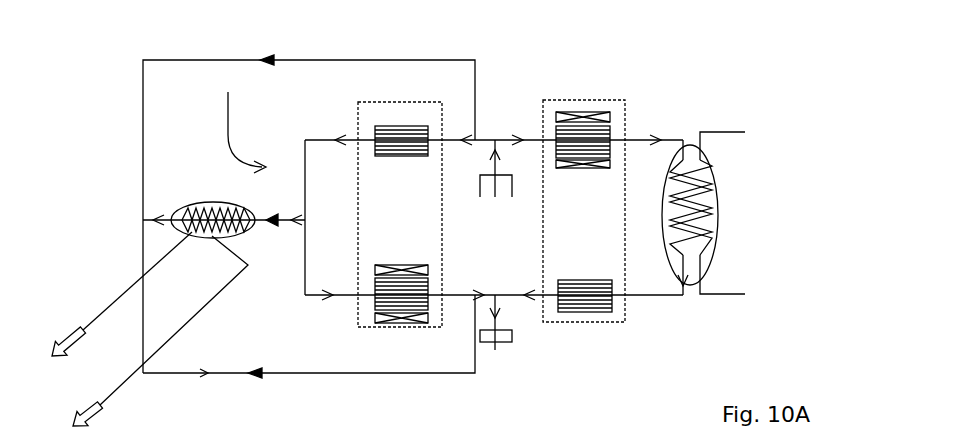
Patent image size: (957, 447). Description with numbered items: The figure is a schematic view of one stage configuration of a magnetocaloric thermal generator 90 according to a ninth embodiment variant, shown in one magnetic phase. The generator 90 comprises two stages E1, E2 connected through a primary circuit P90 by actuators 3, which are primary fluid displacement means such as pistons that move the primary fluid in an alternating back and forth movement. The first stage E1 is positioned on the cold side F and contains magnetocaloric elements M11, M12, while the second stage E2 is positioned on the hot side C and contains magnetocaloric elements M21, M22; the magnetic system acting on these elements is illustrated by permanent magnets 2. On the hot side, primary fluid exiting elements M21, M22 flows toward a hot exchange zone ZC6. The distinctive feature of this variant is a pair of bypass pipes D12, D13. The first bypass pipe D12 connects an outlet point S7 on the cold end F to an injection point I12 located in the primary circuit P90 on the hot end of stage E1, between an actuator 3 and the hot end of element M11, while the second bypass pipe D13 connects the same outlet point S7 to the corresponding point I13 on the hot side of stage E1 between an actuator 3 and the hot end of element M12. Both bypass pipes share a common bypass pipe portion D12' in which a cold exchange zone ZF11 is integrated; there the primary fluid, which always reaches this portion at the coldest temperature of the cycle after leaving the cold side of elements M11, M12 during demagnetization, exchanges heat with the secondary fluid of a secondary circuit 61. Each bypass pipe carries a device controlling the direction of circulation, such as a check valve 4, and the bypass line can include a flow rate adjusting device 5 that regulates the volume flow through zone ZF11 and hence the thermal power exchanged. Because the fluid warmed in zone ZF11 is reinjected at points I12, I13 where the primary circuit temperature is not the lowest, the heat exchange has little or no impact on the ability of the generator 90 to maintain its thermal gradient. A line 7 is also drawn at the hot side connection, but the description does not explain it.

The check valve 4 is at (268, 58).
The first bypass pipe D12 is at (309, 200).
The second bypass pipe D13 is at (165, 374).
The common bypass pipe portion D12' is at (189, 196).
The cold exchange zone ZF11 is at (210, 203).
The flow rate adjusting device 5 is at (270, 224).
The outlet point S7 is at (297, 215).
The cold side F is at (246, 119).
The secondary circuit 61 is at (84, 324).
The first stage E1 is at (395, 328).
The magnetocaloric element M11 is at (405, 140).
The magnetocaloric element M12 is at (406, 325).
The permanent magnets 2 is at (375, 270).
The actuators 3 is at (500, 176).
The injection point I12 is at (476, 138).
The injection point I13 is at (476, 293).
The second stage E2 is at (580, 323).
The magnetocaloric element M21 is at (590, 140).
The magnetocaloric element M22 is at (598, 312).
The primary circuit P90 is at (640, 296).
The hot exchange zone ZC6 is at (718, 215).
The connection line 7 is at (730, 132).
The hot side C is at (740, 160).
The magnetocaloric thermal generator 90 is at (878, 110).